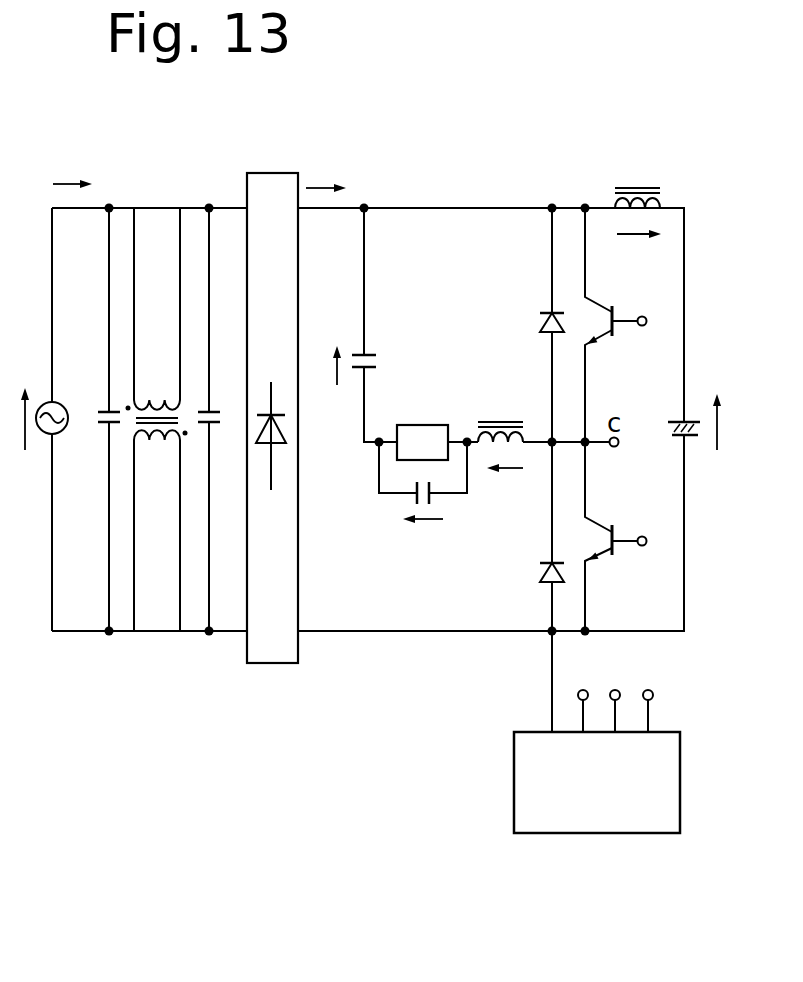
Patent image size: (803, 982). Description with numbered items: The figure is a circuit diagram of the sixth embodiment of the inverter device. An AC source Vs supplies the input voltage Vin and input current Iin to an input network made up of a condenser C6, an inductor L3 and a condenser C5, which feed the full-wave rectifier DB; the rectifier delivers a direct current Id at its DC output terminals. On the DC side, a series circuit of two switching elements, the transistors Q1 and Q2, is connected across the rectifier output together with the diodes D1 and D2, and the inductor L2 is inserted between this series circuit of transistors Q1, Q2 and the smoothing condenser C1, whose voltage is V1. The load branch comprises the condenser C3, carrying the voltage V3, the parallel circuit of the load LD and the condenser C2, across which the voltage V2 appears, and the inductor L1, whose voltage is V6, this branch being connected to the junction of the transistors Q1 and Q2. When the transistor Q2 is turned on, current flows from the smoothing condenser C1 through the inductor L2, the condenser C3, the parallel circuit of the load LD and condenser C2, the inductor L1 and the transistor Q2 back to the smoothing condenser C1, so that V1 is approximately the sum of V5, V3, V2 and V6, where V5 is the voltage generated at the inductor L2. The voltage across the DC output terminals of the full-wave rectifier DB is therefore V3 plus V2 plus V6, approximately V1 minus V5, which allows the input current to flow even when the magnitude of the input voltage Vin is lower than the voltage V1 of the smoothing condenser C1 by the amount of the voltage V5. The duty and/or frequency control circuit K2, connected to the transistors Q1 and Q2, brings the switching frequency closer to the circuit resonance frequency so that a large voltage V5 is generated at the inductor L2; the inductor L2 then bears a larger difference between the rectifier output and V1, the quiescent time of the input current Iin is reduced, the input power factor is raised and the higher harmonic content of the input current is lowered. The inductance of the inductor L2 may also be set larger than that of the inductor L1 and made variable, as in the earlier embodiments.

The AC voltage source Vs is at (65, 404).
The input voltage Vin is at (26, 400).
The input current Iin is at (88, 185).
The input filter capacitor C6 is at (94, 435).
The isolation transformer / inductor L3 is at (157, 419).
The filter capacitor C5 is at (223, 435).
The full-wave rectifier DB is at (272, 401).
The rectified DC current Id is at (339, 188).
The condenser C3 is at (387, 360).
The voltage V3 is at (338, 348).
The load LD is at (422, 442).
The condenser C2 is at (423, 473).
The voltage V2 is at (426, 536).
The inductor L1 is at (500, 414).
The voltage V6 is at (508, 485).
The upper freewheeling diode D1 is at (533, 315).
The lower freewheeling diode D2 is at (532, 581).
The switching element Q1 is at (626, 333).
The switching element Q2 is at (622, 552).
The inductor L2 is at (637, 181).
The voltage V5 is at (639, 252).
The smoothing condenser C1 is at (675, 447).
The voltage V1 is at (720, 404).
The duty and/or frequency control circuit K2 is at (514, 770).